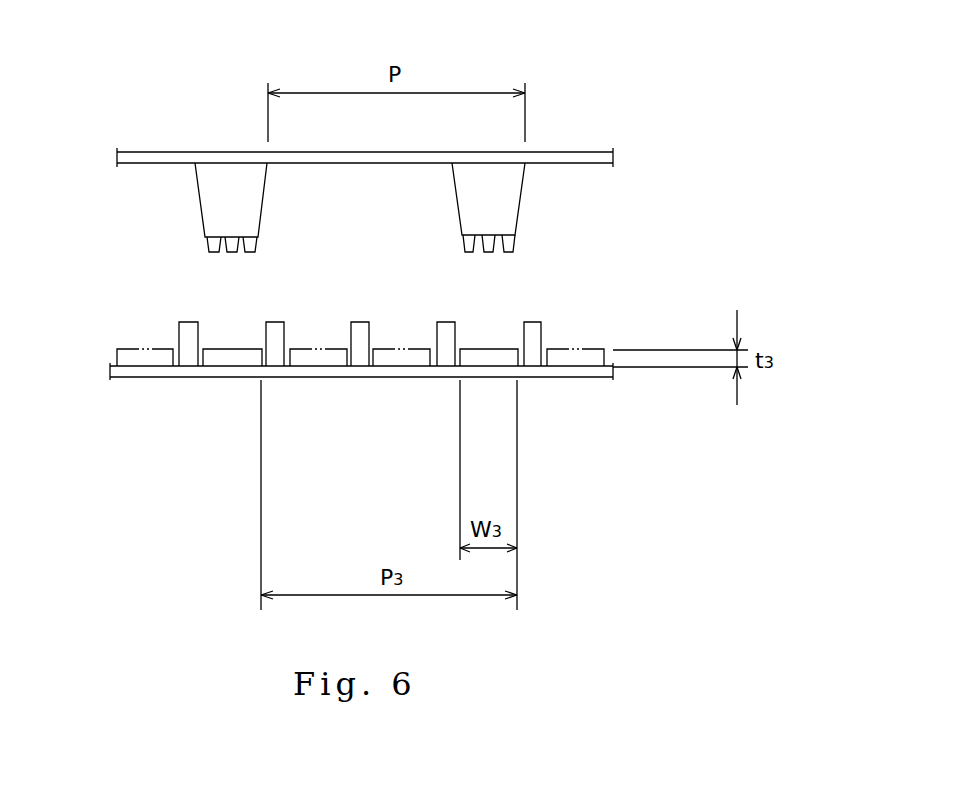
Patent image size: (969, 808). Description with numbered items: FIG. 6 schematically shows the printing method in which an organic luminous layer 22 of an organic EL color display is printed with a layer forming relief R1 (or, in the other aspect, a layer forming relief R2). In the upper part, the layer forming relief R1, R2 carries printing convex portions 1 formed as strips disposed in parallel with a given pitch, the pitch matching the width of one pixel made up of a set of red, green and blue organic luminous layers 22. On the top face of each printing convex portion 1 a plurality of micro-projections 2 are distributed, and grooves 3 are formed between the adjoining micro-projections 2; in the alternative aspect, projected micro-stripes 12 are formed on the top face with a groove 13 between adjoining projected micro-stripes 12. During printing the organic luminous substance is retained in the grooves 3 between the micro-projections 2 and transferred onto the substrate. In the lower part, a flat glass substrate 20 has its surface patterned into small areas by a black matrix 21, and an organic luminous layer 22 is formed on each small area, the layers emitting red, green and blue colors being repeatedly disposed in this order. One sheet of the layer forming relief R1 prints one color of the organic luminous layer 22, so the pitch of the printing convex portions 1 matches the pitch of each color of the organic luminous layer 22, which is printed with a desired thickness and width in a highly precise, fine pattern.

The printing convex portion 1 is at (515, 192).
The micro-projection 2 is at (559, 245).
The projected micro-stripe 12 is at (510, 243).
The groove 3 is at (297, 246).
The groove 13 is at (247, 252).
The layer forming relief R1 is at (659, 87).
The layer forming relief R2 is at (725, 94).
The glass substrate 20 is at (600, 377).
The black matrix 21 is at (450, 322).
The organic luminous layer 22 is at (145, 357).